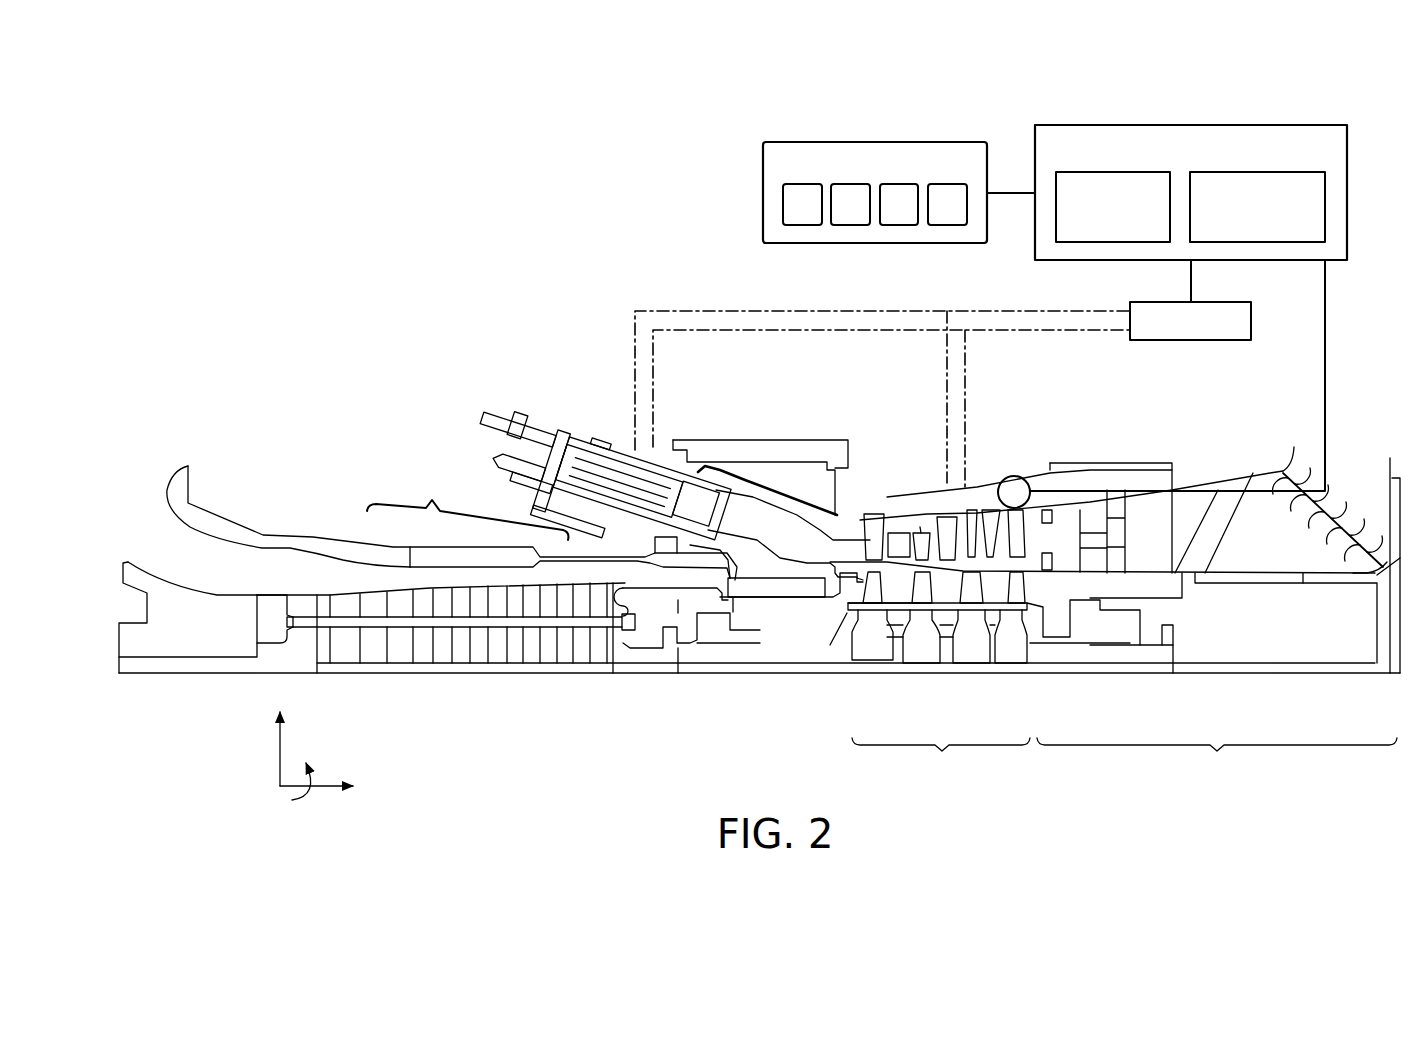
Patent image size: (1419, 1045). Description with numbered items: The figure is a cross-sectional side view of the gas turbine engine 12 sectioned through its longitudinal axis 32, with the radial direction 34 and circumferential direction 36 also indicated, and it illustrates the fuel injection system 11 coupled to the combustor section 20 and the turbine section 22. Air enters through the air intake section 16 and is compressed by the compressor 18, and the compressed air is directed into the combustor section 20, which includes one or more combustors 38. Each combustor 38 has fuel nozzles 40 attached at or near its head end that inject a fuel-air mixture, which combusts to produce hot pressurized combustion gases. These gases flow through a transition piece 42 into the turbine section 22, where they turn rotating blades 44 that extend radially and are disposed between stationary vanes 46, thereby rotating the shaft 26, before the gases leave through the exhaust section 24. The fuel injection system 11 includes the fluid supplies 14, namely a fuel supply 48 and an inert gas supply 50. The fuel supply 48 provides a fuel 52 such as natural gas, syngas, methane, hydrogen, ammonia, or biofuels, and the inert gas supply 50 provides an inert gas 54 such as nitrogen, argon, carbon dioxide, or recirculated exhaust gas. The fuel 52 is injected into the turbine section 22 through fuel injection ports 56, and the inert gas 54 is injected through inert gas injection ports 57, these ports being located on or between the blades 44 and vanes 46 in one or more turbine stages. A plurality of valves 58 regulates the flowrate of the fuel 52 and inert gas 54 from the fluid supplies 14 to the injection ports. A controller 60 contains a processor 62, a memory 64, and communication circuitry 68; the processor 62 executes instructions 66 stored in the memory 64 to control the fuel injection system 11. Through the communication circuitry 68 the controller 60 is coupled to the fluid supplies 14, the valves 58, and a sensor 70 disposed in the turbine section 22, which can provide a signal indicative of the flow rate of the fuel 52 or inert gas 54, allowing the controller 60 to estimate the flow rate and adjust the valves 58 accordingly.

The fuel injection system 11 is at (1338, 360).
The gas turbine engine 12 is at (667, 703).
The fluid supplies 14 is at (1347, 160).
The air intake section 16 is at (181, 565).
The compressor 18 is at (446, 573).
The combustor section 20 is at (730, 385).
The turbine section 22 is at (1102, 615).
The exhaust section 24 is at (1218, 625).
The shaft 26 is at (950, 670).
The longitudinal axis 32 is at (328, 786).
The radial direction 34 is at (280, 752).
The circumferential direction 36 is at (300, 812).
The combustor 38 is at (458, 441).
The fuel nozzle 40 is at (588, 448).
The transition piece 42 is at (747, 480).
The blades 44 is at (872, 545).
The vanes 46 is at (895, 542).
The fuel supply 48 is at (1115, 243).
The inert gas supply 50 is at (1325, 210).
The fuel 52 is at (947, 370).
The inert gas 54 is at (965, 402).
The fuel injection ports 56 is at (955, 513).
The inert gas injection ports 57 is at (970, 517).
The valves 58 is at (1251, 323).
The controller 60 is at (763, 190).
The processor 62 is at (803, 227).
The memory 64 is at (851, 227).
The instructions 66 is at (900, 227).
The communication circuitry 68 is at (945, 227).
The sensor 70 is at (1027, 480).